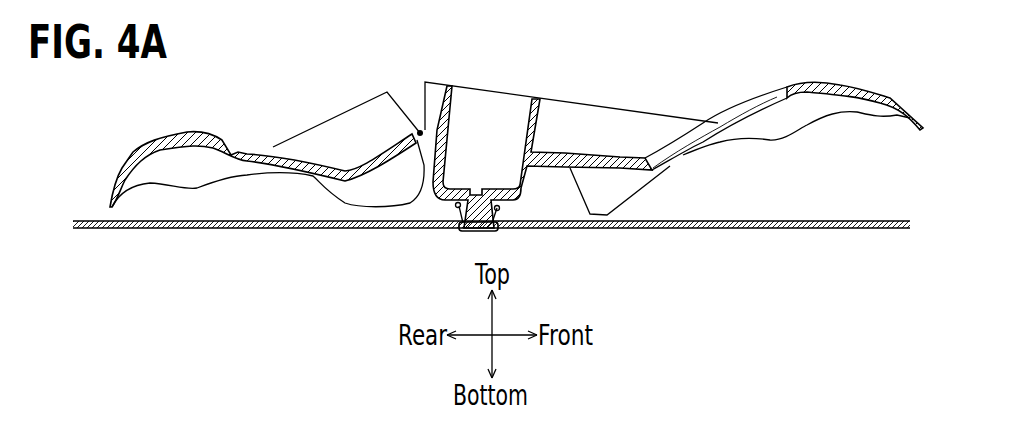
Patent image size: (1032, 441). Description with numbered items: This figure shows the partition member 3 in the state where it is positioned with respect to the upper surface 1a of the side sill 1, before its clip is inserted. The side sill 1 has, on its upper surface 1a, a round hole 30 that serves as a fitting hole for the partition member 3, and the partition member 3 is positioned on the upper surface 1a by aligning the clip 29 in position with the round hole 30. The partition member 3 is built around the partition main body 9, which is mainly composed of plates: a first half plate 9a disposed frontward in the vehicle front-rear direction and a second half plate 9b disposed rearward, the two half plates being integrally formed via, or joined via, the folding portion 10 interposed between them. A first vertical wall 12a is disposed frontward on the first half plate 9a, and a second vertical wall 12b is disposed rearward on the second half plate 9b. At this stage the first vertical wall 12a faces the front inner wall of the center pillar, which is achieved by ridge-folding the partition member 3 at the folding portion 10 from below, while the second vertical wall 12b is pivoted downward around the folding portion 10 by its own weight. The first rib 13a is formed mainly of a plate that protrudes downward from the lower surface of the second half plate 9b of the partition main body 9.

The side sill 1 is at (829, 198).
The upper surface of side sill 1a is at (737, 221).
The partition member 3 is at (651, 90).
The partition main body 9 is at (516, 112).
The first half plate 9a is at (744, 93).
The second half plate 9b is at (263, 132).
The folding portion 10 is at (422, 131).
The first vertical wall 12a is at (830, 82).
The second vertical wall 12b is at (186, 132).
The first rib 13a is at (357, 187).
The clip 29 is at (458, 206).
The round hole 30 is at (488, 230).